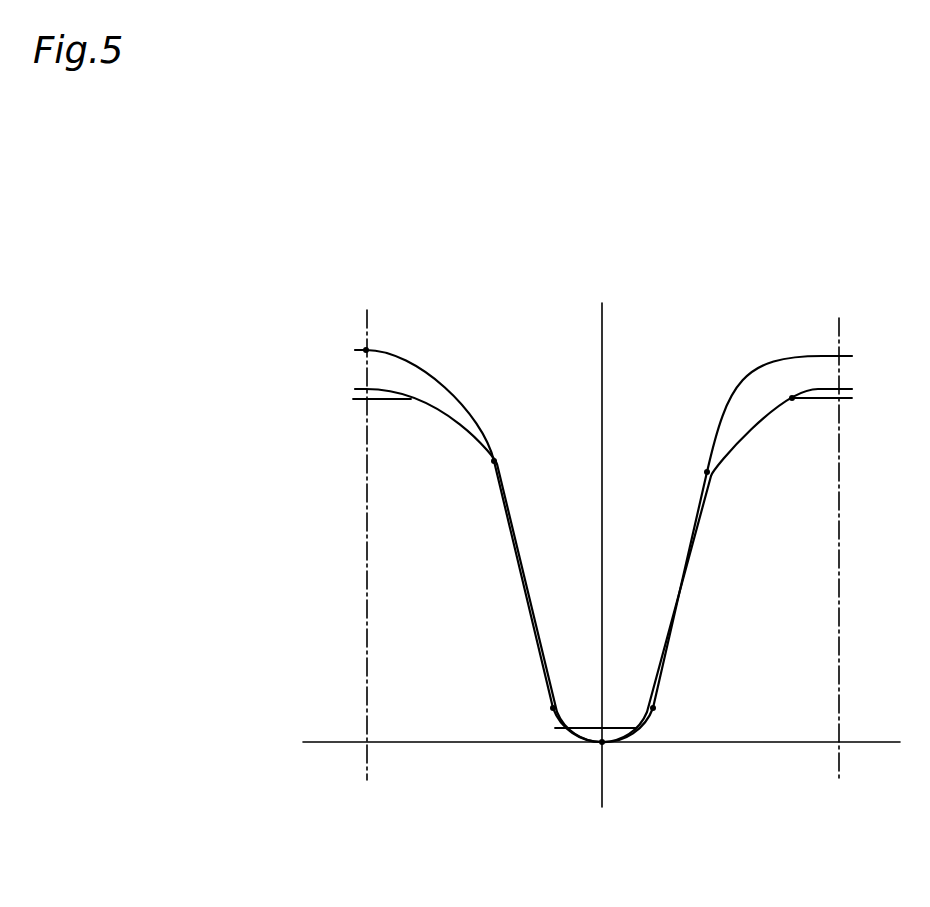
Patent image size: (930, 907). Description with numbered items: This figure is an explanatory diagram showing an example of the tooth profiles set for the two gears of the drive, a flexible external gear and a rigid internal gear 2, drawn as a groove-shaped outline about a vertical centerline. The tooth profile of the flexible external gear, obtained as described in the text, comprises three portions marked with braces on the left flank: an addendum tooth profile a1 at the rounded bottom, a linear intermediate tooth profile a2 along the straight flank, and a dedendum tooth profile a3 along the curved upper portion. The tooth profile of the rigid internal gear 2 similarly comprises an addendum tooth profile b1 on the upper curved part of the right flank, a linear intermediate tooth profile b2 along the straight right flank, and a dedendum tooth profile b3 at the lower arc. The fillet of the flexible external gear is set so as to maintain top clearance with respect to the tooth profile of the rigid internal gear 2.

The rigid internal gear 2 is at (786, 676).
The addendum tooth profile a1 is at (571, 730).
The linear intermediate tooth profile a2 is at (502, 467).
The dedendum tooth profile a3 is at (499, 447).
The addendum tooth profile b1 is at (788, 403).
The linear intermediate tooth profile b2 is at (709, 480).
The dedendum tooth profile b3 is at (654, 716).